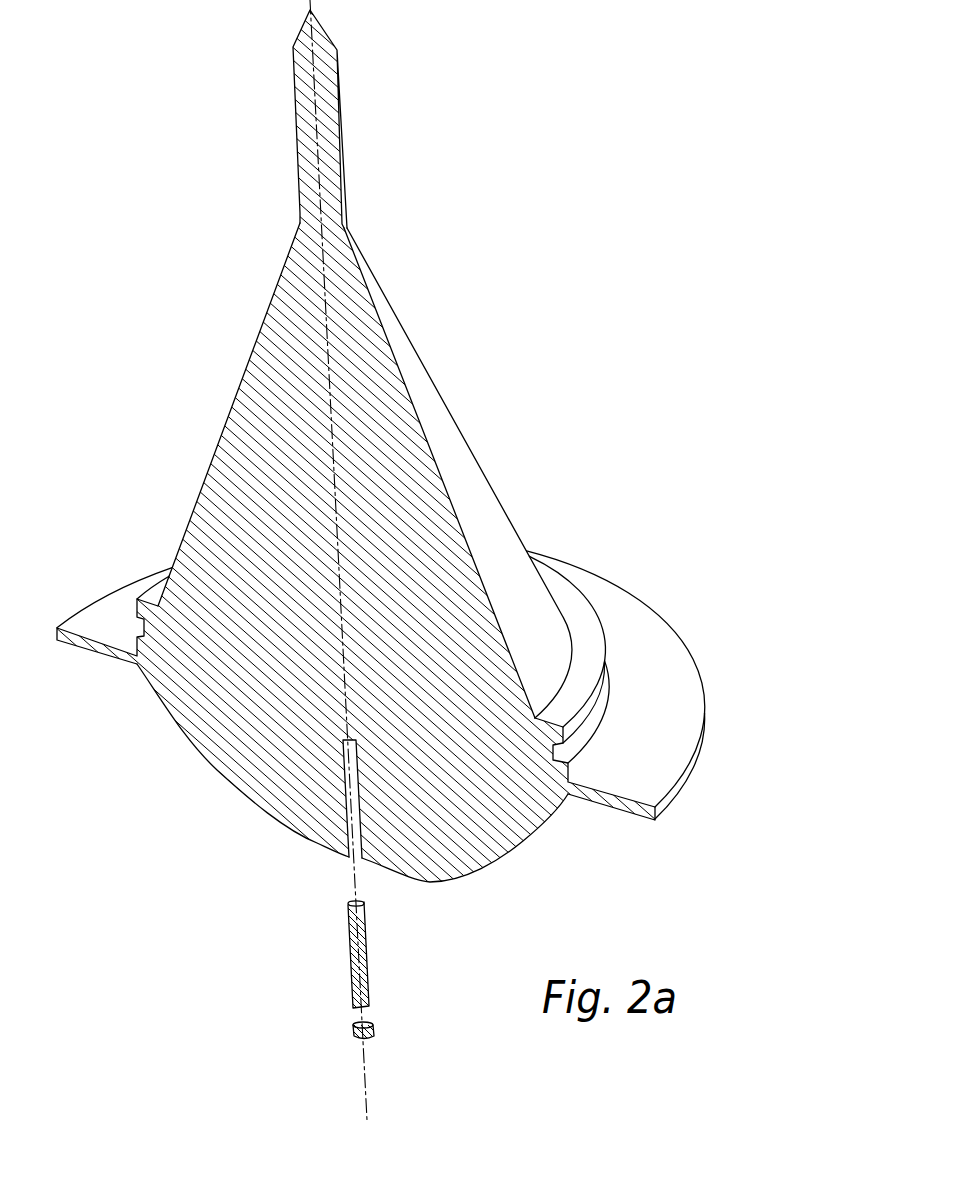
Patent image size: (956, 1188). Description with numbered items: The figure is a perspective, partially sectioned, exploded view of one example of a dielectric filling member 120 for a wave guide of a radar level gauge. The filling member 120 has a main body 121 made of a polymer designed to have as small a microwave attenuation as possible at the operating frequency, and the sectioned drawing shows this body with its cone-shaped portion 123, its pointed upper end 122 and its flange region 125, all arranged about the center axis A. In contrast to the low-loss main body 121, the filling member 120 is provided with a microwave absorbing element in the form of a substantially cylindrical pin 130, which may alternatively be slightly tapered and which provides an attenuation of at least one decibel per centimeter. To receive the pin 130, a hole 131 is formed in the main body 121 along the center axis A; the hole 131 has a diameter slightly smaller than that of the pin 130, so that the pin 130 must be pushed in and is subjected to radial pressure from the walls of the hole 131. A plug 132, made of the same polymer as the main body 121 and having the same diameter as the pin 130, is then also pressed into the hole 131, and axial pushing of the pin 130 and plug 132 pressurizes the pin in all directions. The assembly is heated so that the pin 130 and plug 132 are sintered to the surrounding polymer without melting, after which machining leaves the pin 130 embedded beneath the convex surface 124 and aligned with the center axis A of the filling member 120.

The dielectric filling member 120 is at (566, 390).
The main body 121 is at (278, 310).
The tip 122 is at (340, 147).
The outer conical surface 123 is at (370, 294).
The convex surface 124 is at (472, 870).
The flange 125 is at (100, 621).
The pin 130 is at (358, 963).
The hole 131 is at (352, 855).
The plug 132 is at (360, 1037).
The center axis A is at (368, 1087).